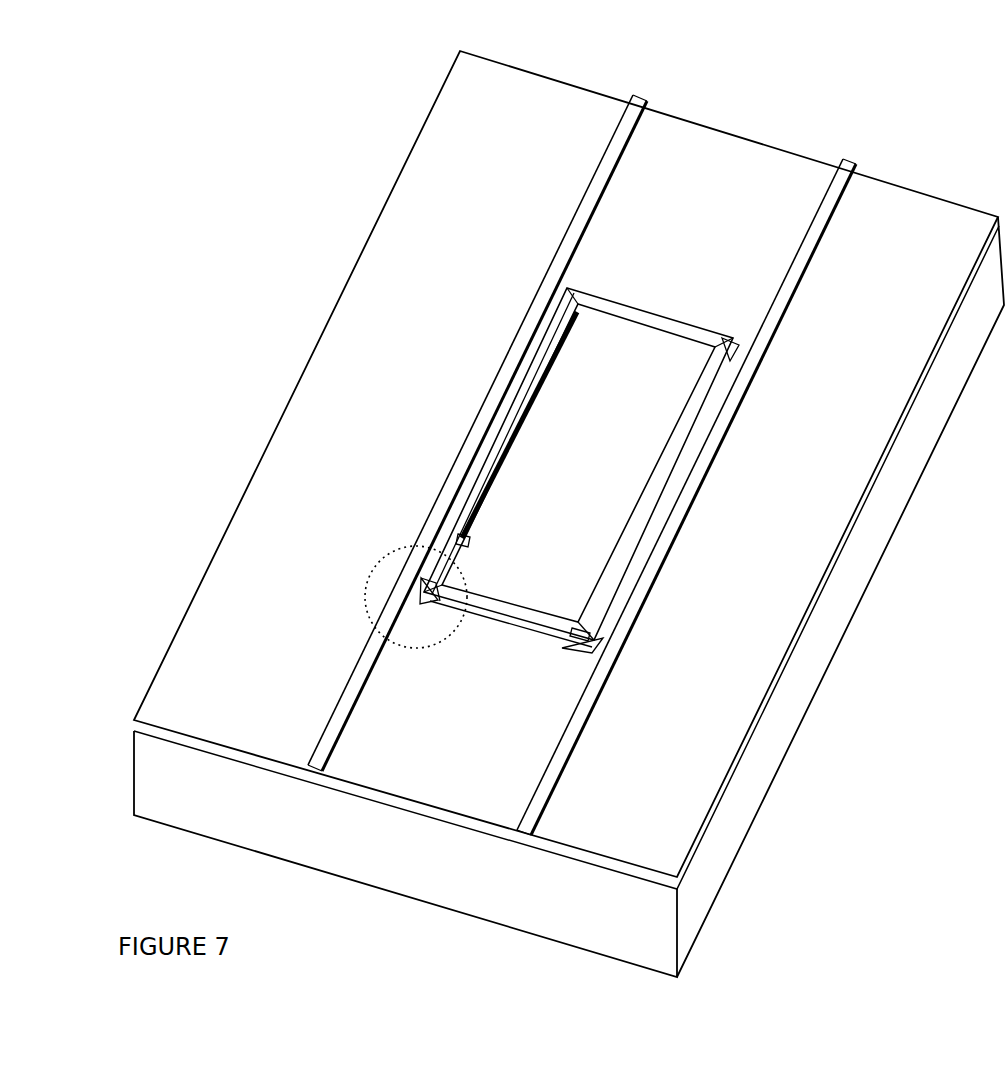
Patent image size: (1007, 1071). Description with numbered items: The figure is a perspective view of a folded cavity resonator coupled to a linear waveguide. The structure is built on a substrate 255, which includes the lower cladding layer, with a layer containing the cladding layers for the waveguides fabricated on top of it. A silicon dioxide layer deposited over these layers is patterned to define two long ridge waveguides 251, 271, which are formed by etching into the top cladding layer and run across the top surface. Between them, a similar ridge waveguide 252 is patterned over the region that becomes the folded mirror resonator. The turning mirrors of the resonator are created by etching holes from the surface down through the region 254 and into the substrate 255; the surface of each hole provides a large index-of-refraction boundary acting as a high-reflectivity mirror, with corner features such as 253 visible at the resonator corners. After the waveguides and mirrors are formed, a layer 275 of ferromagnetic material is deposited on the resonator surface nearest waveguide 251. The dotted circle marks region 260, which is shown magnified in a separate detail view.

The ridge waveguide 251 is at (618, 152).
The ridge waveguide 271 is at (816, 219).
The ridge waveguide 252 is at (668, 432).
The corner pad 253 is at (728, 338).
The layer of ferromagnetic material 275 is at (527, 395).
The region 260 is at (386, 565).
The region 254 is at (593, 860).
The substrate 255 is at (697, 890).